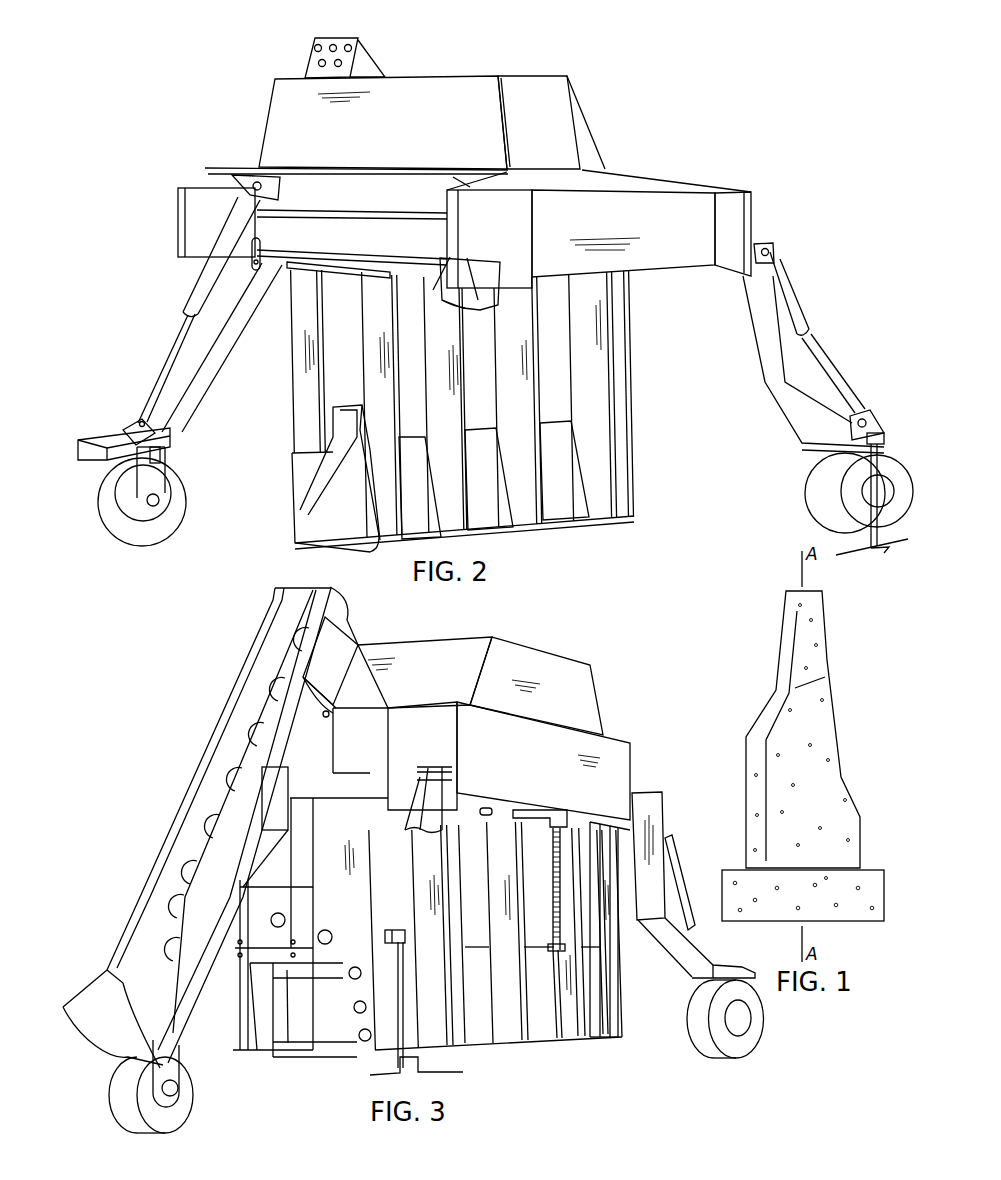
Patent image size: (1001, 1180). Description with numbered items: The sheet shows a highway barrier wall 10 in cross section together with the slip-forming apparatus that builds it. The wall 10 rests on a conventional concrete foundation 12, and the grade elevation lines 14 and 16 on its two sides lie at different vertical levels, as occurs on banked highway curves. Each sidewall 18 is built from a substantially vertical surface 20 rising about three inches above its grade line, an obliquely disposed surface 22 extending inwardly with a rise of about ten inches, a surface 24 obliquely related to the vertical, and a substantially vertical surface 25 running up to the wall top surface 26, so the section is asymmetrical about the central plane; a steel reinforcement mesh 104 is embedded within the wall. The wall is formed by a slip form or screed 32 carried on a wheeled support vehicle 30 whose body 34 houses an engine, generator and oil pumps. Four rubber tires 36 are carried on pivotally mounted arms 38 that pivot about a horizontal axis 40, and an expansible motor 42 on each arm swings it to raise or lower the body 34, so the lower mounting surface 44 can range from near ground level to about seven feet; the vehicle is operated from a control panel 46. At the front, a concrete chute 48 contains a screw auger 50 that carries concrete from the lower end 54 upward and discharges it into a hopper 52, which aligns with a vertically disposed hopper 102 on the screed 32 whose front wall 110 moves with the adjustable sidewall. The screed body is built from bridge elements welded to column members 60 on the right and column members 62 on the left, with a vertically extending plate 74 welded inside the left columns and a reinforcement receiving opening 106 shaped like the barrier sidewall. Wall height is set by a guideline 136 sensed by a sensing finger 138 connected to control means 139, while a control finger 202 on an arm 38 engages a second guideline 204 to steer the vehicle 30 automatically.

In FIG. 1, the highway barrier wall 10 is at (804, 753).
In FIG. 1, the concrete foundation 12 is at (851, 913).
In FIG. 1, the grade elevation line 14 is at (744, 742).
In FIG. 1, the grade elevation line 16 is at (864, 822).
In FIG. 1, the sidewall 18 is at (810, 712).
In FIG. 1, the vertical extending surface 20 is at (861, 813).
In FIG. 1, the obliquely disposed surface 22 is at (849, 791).
In FIG. 1, the oblique surface 24 is at (834, 715).
In FIG. 1, the vertical surface 25 is at (827, 611).
In FIG. 1, the wall top surface 26 is at (796, 587).
In FIG. 1, the steel reinforcement mesh 104 is at (825, 677).
In FIG. 2, the wheeled support vehicle 30 is at (606, 132).
In FIG. 3, the wheeled support vehicle 30 is at (556, 636).
In FIG. 2, the slip form 32 is at (542, 542).
In FIG. 3, the slip form 32 is at (328, 1077).
In FIG. 2, the body 34 is at (590, 236).
In FIG. 3, the body 34 is at (530, 766).
In FIG. 2, the rubber tire 36 is at (132, 543).
In FIG. 3, the rubber tire 36 is at (135, 1128).
In FIG. 2, the pivotally mounted arm 38 is at (199, 398).
In FIG. 3, the pivotally mounted arm 38 is at (677, 953).
In FIG. 2, the horizontal axis 40 is at (769, 248).
In FIG. 2, the expansible motor 42 is at (233, 223).
In FIG. 3, the expansible motor 42 is at (673, 888).
In FIG. 2, the lower mounting surface 44 is at (272, 240).
In FIG. 3, the lower mounting surface 44 is at (530, 810).
In FIG. 2, the control panel 46 is at (365, 62).
In FIG. 3, the concrete chute 48 is at (162, 1003).
In FIG. 3, the screw auger 50 is at (198, 818).
In FIG. 3, the hopper 52 is at (423, 746).
In FIG. 3, the lower end of conveyor 54 is at (105, 980).
In FIG. 2, the column-like member 60 is at (507, 374).
In FIG. 3, the column member 62 is at (556, 1027).
In FIG. 3, the vertically extending plate 74 is at (378, 1048).
In FIG. 3, the hopper 102 is at (402, 903).
In FIG. 3, the reinforcement receiving opening 106 is at (337, 1006).
In FIG. 3, the hopper front wall 110 is at (343, 838).
In FIG. 3, the guideline 136 is at (440, 1075).
In FIG. 3, the sensing finger 138 is at (404, 1033).
In FIG. 3, the control means 139 is at (405, 937).
In FIG. 2, the control finger 202 is at (882, 553).
In FIG. 2, the guideline 204 is at (858, 556).